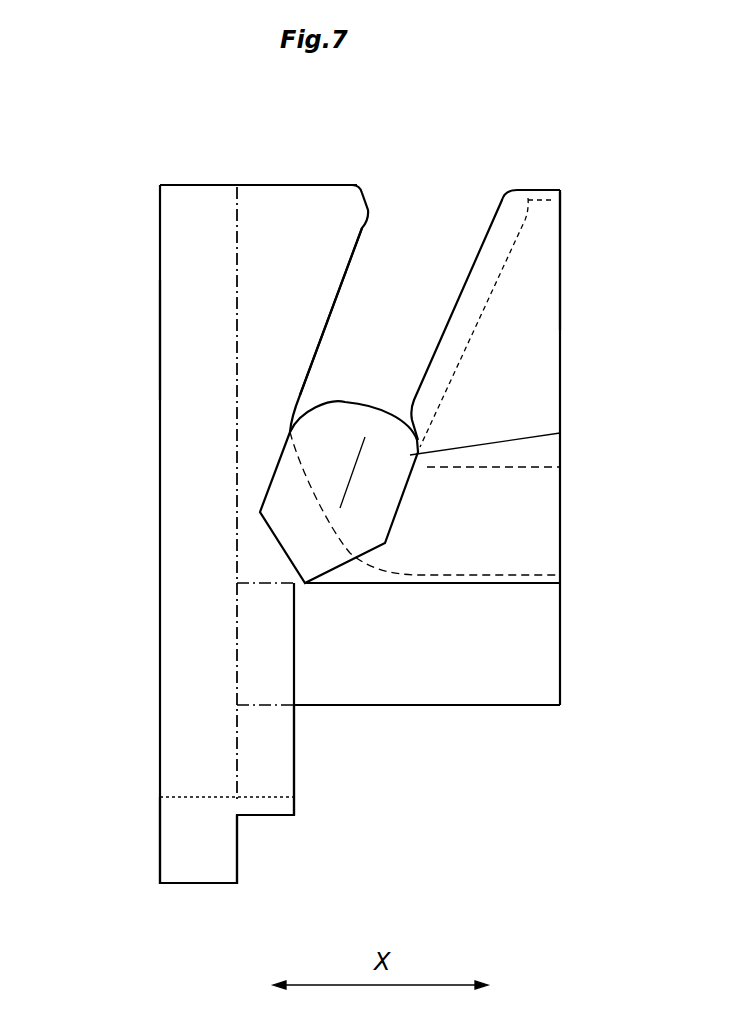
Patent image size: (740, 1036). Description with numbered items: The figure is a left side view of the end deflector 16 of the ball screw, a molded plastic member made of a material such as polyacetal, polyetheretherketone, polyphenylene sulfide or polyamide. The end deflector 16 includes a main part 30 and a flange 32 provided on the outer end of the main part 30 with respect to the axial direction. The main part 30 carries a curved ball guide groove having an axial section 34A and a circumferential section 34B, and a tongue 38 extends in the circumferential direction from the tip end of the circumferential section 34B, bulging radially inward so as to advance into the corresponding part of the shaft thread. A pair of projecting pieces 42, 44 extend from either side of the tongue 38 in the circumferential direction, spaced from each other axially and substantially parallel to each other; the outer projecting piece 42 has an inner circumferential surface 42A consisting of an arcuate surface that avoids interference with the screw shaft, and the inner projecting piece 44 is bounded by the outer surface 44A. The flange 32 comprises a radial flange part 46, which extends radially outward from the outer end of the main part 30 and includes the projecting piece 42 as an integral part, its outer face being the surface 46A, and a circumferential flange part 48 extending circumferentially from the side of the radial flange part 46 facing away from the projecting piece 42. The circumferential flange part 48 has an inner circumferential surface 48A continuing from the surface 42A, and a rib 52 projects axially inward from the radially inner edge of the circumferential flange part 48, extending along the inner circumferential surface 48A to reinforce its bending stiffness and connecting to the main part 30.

The end deflector 16 is at (560, 360).
The main part 30 is at (522, 648).
The flange 32 is at (197, 510).
The axial section 34A is at (540, 481).
The circumferential section 34B is at (560, 433).
The tongue 38 is at (352, 427).
The projecting piece 42 is at (303, 195).
The inner circumferential surface 42A is at (305, 243).
The projecting piece 44 is at (540, 198).
The outer surface of finger 44A is at (543, 242).
The radial flange part 46 is at (160, 282).
The outer surface of vertical portion 46A is at (187, 323).
The circumferential flange part 48 is at (160, 775).
The inner circumferential surface 48A is at (167, 693).
The rib 52 is at (294, 747).